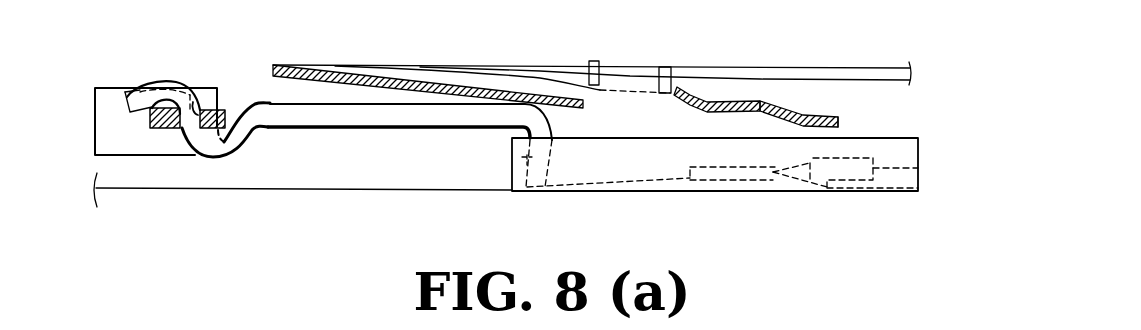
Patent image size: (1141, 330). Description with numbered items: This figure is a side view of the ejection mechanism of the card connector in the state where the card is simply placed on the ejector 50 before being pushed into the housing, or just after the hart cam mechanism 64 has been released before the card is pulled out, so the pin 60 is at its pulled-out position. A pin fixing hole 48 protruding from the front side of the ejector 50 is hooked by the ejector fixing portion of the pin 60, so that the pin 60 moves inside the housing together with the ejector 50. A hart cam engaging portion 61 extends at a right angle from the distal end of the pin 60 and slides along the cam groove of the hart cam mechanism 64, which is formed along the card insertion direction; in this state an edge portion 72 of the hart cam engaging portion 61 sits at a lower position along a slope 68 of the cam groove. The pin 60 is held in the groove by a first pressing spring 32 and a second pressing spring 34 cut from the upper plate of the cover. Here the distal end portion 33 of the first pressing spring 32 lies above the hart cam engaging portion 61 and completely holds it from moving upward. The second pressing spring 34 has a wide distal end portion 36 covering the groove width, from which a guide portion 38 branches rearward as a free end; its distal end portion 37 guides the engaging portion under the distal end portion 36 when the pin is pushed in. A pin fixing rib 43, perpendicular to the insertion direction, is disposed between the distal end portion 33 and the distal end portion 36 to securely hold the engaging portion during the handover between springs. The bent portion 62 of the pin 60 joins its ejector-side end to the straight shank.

The first pressing spring 32 is at (398, 68).
The distal end portion 33 is at (551, 97).
The second pressing spring 34 is at (592, 61).
The distal end portion 36 is at (842, 119).
The distal end portion 37 is at (701, 90).
The guide portion 38 is at (764, 100).
The pin fixing rib 43 is at (661, 66).
The pin fixing hole 48 is at (192, 122).
The ejector 50 is at (90, 128).
The pin 60 is at (333, 122).
The hart cam engaging portion 61 is at (527, 162).
The bent portion 62 is at (182, 126).
The hart cam mechanism 64 is at (921, 137).
The slope 68 is at (808, 196).
The edge portion 72 is at (536, 195).